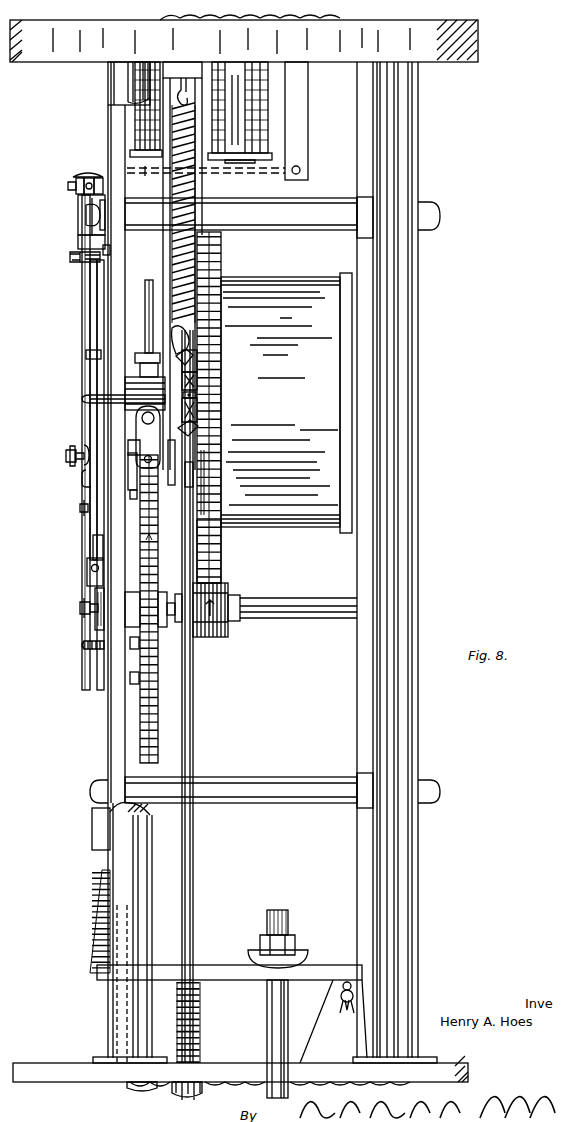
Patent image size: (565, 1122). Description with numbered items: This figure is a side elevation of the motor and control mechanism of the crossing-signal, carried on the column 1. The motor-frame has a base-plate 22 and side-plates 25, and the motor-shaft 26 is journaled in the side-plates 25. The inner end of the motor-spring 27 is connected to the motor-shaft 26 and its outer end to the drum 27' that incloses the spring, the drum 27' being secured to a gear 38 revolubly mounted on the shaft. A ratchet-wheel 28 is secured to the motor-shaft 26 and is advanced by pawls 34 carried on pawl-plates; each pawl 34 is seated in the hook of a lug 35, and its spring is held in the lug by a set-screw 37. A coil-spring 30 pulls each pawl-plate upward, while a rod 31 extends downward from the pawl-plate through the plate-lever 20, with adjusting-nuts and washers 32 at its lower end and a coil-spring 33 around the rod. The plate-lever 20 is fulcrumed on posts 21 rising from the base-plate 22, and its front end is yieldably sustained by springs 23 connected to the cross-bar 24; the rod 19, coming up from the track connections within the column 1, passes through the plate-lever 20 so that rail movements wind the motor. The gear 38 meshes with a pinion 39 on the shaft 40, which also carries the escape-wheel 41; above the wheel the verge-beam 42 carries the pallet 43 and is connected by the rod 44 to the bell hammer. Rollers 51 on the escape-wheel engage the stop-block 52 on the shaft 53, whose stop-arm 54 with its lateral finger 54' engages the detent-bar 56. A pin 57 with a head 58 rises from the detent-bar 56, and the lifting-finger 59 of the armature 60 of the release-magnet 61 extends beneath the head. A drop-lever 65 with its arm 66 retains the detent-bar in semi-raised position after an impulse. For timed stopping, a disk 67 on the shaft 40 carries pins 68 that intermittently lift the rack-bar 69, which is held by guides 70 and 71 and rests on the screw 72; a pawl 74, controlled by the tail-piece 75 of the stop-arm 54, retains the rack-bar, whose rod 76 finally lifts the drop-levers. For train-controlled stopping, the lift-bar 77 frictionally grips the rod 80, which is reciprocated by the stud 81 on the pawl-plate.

The column 1 is at (140, 1090).
The rod 19 is at (282, 1014).
The plate-lever 20 is at (226, 968).
The posts 21 is at (333, 1021).
The base-plate 22 is at (215, 1068).
The springs 23 is at (93, 930).
The cross-bar 24 is at (95, 832).
The side-plates 25 is at (116, 683).
The motor-shaft 26 is at (350, 410).
The motor-spring 27 is at (172, 335).
The drum 27' is at (280, 402).
The ratchet-wheel 28 is at (198, 332).
The coil-spring 30 is at (176, 266).
The rod 31 is at (190, 686).
The adjusting-nuts and washers 32 is at (176, 1100).
The coil-spring 33 is at (200, 1024).
The pawls 34 is at (192, 380).
The lugs 35 is at (198, 353).
The set-screw 37 is at (173, 356).
The gear 38 is at (220, 550).
The pinion 39 is at (215, 635).
The shaft 40 is at (272, 614).
The escape-wheel 41 is at (150, 733).
The verge-beam 42 is at (140, 434).
The pallet 43 is at (152, 478).
The rod 44 is at (145, 282).
The rollers 51 is at (134, 495).
The stop-block 52 is at (132, 470).
The shaft 53 is at (68, 457).
The stop-arm 54 is at (68, 442).
The finger 54' is at (77, 215).
The detent-bar 56 is at (72, 185).
The pin 57 is at (76, 180).
The head 58 is at (82, 178).
The lifting-finger 59 is at (91, 178).
The armature 60 is at (206, 180).
The release-magnet 61 is at (135, 133).
The drop-lever 65 is at (82, 238).
The arm 66 is at (100, 198).
The disk 67 is at (95, 624).
The pins 68 is at (88, 596).
The rack-bar 69 is at (93, 543).
The guide 70 is at (88, 577).
The guide 71 is at (90, 357).
The screw 72 is at (85, 648).
The pawl 74 is at (88, 503).
The tail-piece 75 is at (86, 483).
The rod 76 is at (93, 298).
The lift-bar 77 is at (113, 260).
The rod 80 is at (106, 328).
The stud 81 is at (100, 410).